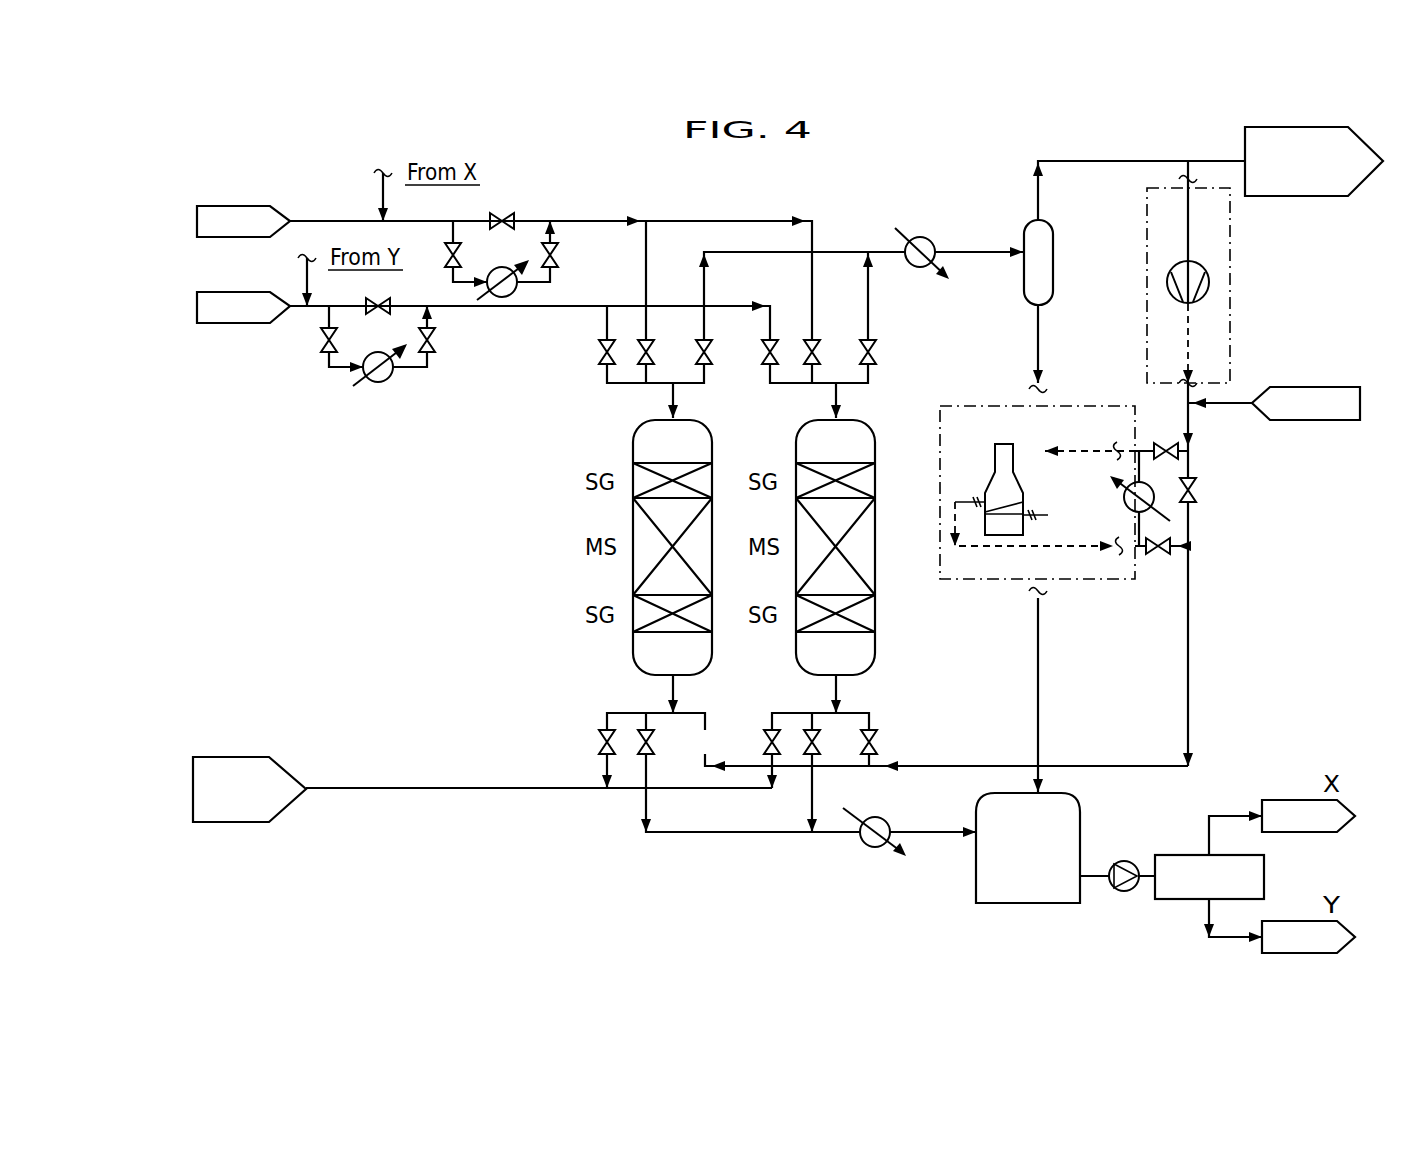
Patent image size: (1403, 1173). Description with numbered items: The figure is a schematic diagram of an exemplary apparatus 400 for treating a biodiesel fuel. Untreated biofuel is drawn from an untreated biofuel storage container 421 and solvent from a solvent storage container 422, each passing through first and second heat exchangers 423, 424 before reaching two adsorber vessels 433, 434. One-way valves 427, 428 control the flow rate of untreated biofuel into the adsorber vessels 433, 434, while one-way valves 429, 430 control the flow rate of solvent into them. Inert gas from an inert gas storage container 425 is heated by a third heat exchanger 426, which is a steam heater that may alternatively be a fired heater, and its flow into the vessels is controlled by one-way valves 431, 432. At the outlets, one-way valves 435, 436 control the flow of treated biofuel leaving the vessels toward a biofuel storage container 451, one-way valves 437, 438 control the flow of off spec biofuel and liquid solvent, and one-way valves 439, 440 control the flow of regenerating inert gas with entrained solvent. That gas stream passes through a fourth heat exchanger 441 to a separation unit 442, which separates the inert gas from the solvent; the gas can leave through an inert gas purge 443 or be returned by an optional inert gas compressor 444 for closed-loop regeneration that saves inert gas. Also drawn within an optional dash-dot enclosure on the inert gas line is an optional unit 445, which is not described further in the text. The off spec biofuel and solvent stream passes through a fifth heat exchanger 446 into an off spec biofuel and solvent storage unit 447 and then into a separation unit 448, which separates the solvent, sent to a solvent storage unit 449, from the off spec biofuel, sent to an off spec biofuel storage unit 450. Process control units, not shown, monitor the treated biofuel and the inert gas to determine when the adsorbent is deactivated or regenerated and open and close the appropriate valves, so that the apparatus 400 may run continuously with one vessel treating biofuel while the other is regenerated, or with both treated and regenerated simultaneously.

The apparatus 400 is at (277, 178).
The untreated biofuel storage container 421 is at (245, 323).
The solvent storage container 422 is at (245, 237).
The first heat exchanger 423 is at (395, 373).
The second heat exchanger 424 is at (520, 292).
The inert gas storage container 425 is at (1293, 420).
The third heat exchanger 426 is at (1158, 503).
The one-way valve 427 is at (598, 354).
The one-way valve 428 is at (762, 345).
The one-way valve 429 is at (638, 362).
The one-way valve 430 is at (820, 348).
The one-way valve 431 is at (705, 754).
The one-way valve 432 is at (877, 747).
The adsorber vessel 433 is at (633, 443).
The adsorber vessel 434 is at (797, 443).
The one-way valve 435 is at (598, 744).
The one-way valve 436 is at (764, 734).
The one-way valve 437 is at (642, 729).
The one-way valve 438 is at (807, 729).
The one-way valve 439 is at (708, 360).
The one-way valve 440 is at (877, 353).
The fourth heat exchanger 441 is at (935, 245).
The separation unit 442 is at (1055, 240).
The inert gas purge 443 is at (1244, 138).
The inert gas compressor 444 is at (1232, 305).
The optional oxidative catalytic unit 445 is at (1025, 528).
The fifth heat exchanger 446 is at (893, 820).
The off spec biofuel and solvent storage unit 447 is at (1082, 828).
The separation unit 448 is at (1173, 855).
The solvent storage unit 449 is at (1288, 800).
The off spec biofuel storage unit 450 is at (1288, 921).
The biofuel storage container 451 is at (210, 757).